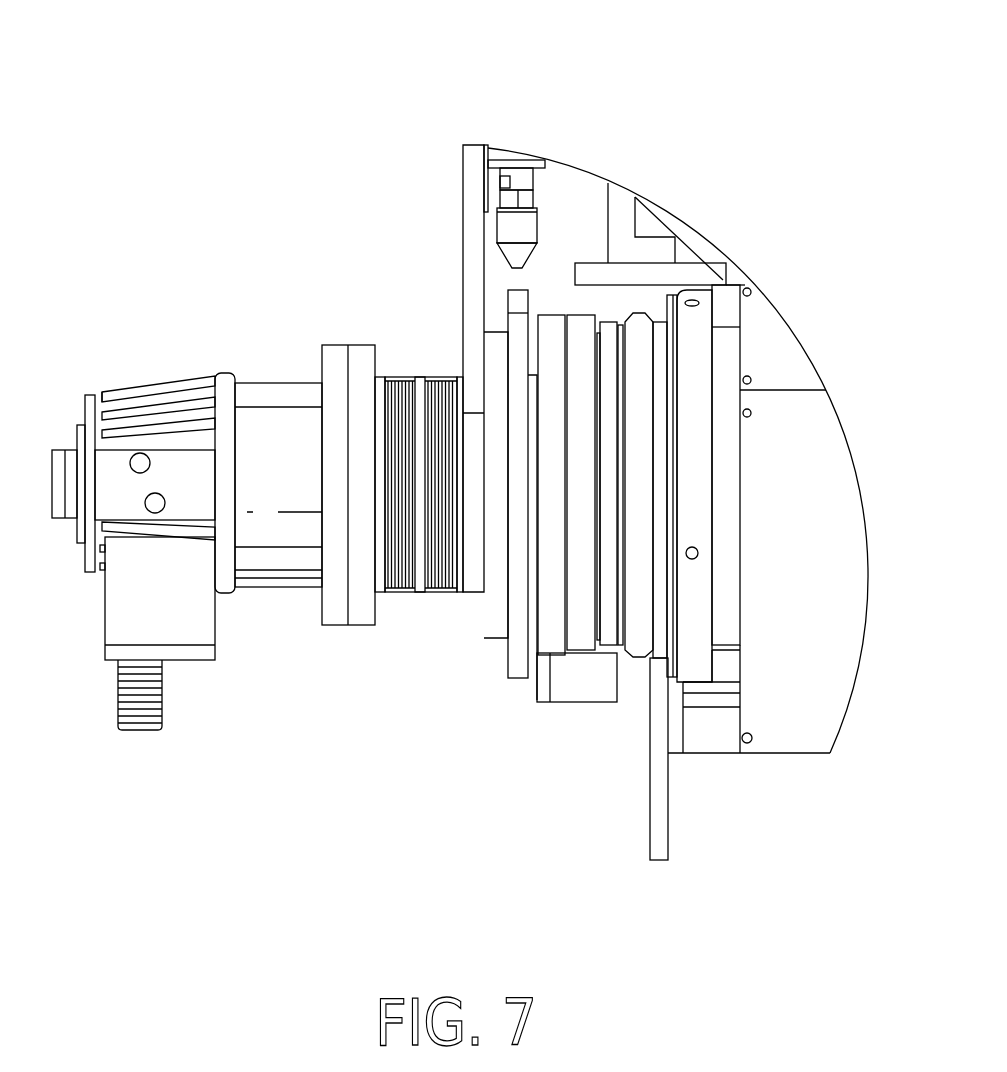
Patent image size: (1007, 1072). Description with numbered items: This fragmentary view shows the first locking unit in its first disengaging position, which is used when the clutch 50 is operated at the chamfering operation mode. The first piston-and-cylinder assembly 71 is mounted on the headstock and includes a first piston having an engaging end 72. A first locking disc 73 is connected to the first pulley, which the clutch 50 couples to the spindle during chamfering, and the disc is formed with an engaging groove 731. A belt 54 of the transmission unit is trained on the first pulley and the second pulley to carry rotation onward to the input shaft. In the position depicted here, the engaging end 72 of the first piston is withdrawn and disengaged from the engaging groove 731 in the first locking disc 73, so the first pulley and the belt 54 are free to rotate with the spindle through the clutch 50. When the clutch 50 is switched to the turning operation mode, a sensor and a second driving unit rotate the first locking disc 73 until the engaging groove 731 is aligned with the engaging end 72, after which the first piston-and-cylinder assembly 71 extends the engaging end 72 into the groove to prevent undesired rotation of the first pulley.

The clutch 50 is at (637, 612).
The belt 54 is at (555, 510).
The first piston-and-cylinder assembly 71 is at (512, 146).
The engaging end 72 is at (540, 252).
The first locking disc 73 is at (515, 375).
The engaging groove 731 is at (498, 292).